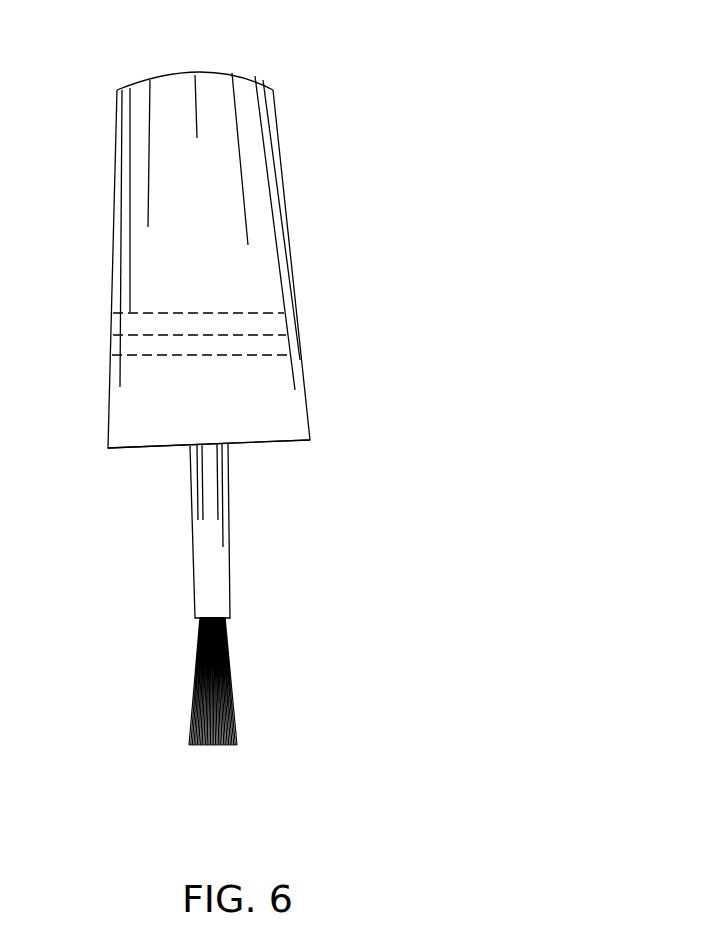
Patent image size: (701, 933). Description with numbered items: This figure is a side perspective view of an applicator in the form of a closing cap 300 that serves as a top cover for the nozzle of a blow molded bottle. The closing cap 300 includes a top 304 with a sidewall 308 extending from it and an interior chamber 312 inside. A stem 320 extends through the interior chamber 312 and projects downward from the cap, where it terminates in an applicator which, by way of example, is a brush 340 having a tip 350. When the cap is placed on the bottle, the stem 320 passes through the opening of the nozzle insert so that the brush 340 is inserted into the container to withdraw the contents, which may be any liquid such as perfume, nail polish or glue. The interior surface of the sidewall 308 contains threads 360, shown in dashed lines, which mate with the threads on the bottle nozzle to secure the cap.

The closing cap 300 is at (385, 60).
The top 304 is at (122, 90).
The sidewall 308 is at (295, 292).
The interior chamber 312 is at (282, 442).
The stem 320 is at (193, 555).
The brush 340 is at (230, 677).
The tip 350 is at (218, 746).
The threads 360 is at (278, 355).